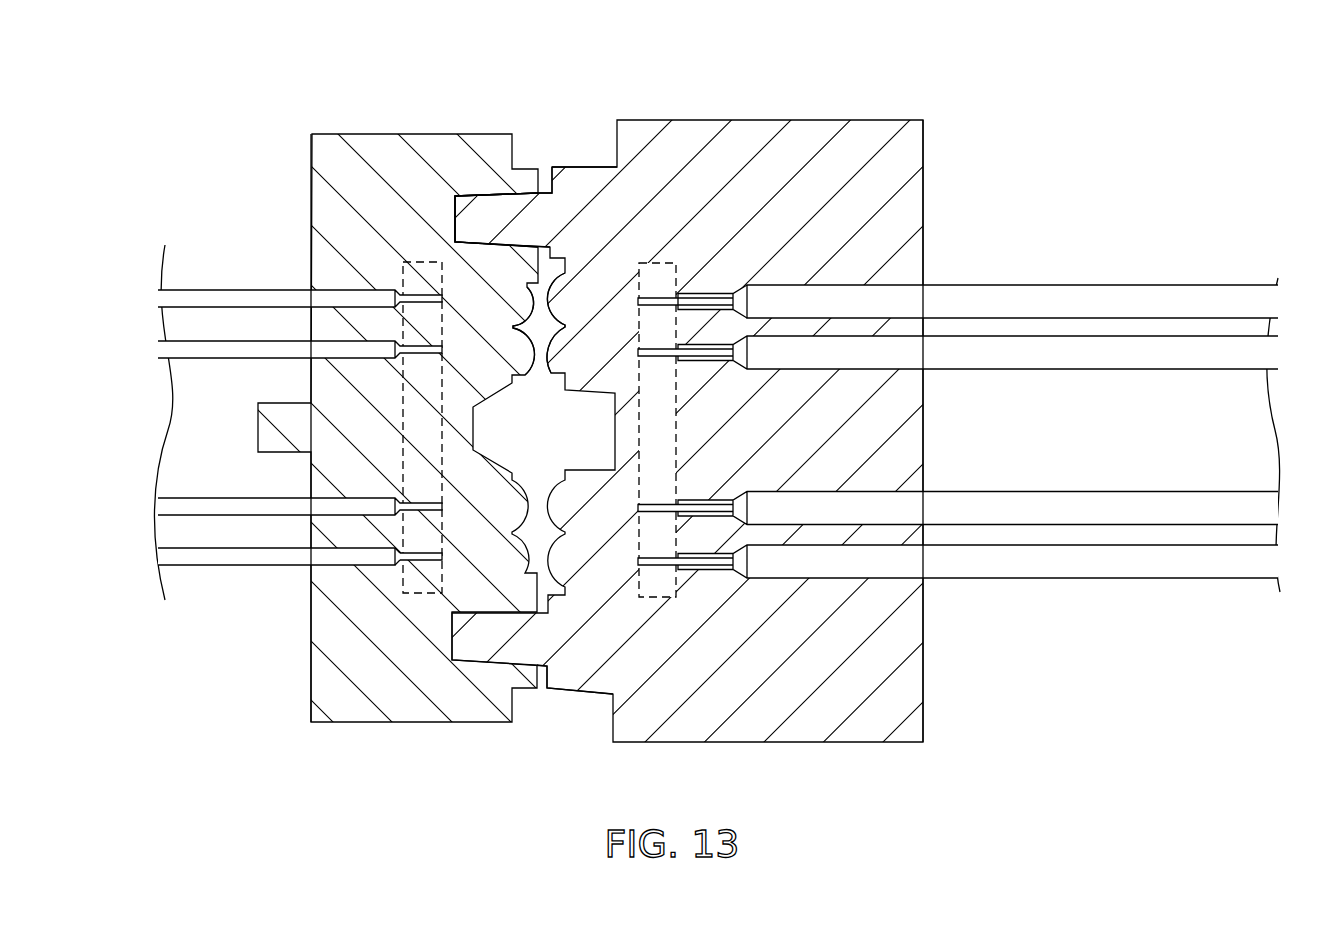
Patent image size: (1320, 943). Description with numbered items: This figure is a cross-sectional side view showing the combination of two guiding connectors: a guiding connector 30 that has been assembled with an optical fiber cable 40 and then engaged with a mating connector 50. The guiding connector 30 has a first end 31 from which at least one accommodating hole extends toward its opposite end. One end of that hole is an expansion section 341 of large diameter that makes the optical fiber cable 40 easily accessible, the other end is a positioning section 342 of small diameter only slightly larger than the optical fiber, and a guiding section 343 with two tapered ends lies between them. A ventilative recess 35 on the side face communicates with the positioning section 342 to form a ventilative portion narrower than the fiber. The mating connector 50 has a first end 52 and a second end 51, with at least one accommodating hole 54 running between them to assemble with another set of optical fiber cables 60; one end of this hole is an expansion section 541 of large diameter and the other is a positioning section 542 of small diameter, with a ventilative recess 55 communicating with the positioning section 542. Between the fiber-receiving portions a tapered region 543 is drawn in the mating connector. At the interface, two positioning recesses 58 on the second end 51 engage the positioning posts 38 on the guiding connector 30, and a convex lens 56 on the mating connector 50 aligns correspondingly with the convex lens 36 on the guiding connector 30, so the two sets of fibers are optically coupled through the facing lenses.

The guiding connector 30 is at (900, 116).
The first end 31 is at (550, 670).
The ventilative recess 35 is at (658, 596).
The convex lens 36 is at (552, 358).
The positioning posts 38 is at (467, 213).
The optical fiber cable 40 is at (955, 311).
The expansion section 341 is at (954, 174).
The positioning section 342 is at (708, 293).
The guiding section 343 is at (660, 296).
The mating connector 50 is at (352, 133).
The second end 51 is at (543, 168).
The first end 52 is at (310, 672).
The accommodating hole 54 is at (345, 287).
The expansion section 541 is at (300, 667).
The positioning section 542 is at (422, 560).
The crimp portion 543 is at (400, 567).
The ventilative recess 55 is at (438, 600).
The convex lens 56 is at (525, 358).
The positioning recesses 58 is at (492, 195).
The optical fiber cables 60 is at (298, 465).